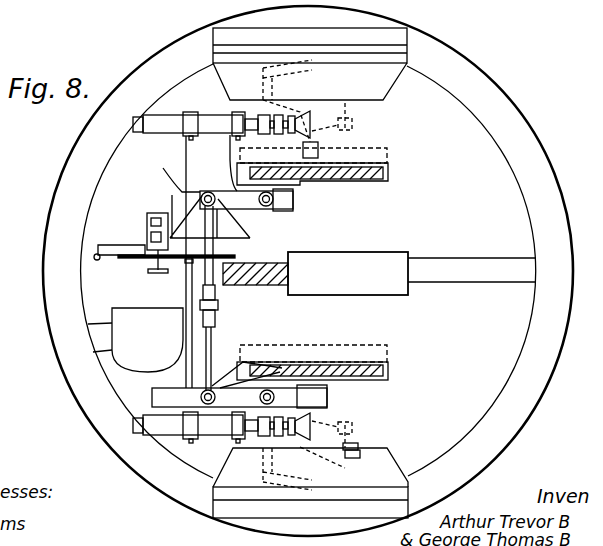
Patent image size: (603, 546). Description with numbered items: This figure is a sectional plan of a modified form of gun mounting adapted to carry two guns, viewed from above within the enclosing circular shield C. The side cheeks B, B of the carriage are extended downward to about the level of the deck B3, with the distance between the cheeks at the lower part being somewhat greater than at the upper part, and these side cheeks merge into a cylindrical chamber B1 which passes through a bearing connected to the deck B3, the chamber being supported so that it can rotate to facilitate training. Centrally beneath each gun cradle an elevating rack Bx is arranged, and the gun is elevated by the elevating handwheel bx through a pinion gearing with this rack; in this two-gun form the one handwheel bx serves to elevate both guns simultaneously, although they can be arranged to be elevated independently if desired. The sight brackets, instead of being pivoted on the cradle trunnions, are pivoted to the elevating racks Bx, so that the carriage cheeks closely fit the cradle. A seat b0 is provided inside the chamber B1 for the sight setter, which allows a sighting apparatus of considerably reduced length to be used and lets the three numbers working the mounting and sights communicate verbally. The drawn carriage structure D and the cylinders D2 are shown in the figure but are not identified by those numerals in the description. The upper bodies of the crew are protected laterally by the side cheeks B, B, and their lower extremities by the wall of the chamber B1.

The shield C is at (308, 271).
The cylindrical chamber B1 is at (318, 271).
The side cheeks of the carriage B is at (310, 273).
The deck B3 is at (379, 273).
The elevating rack Bx is at (294, 186).
The carriage D is at (283, 200).
The hydraulic cylinders D2 is at (217, 140).
The elevating handwheel bx is at (352, 122).
The seat b0 is at (135, 340).